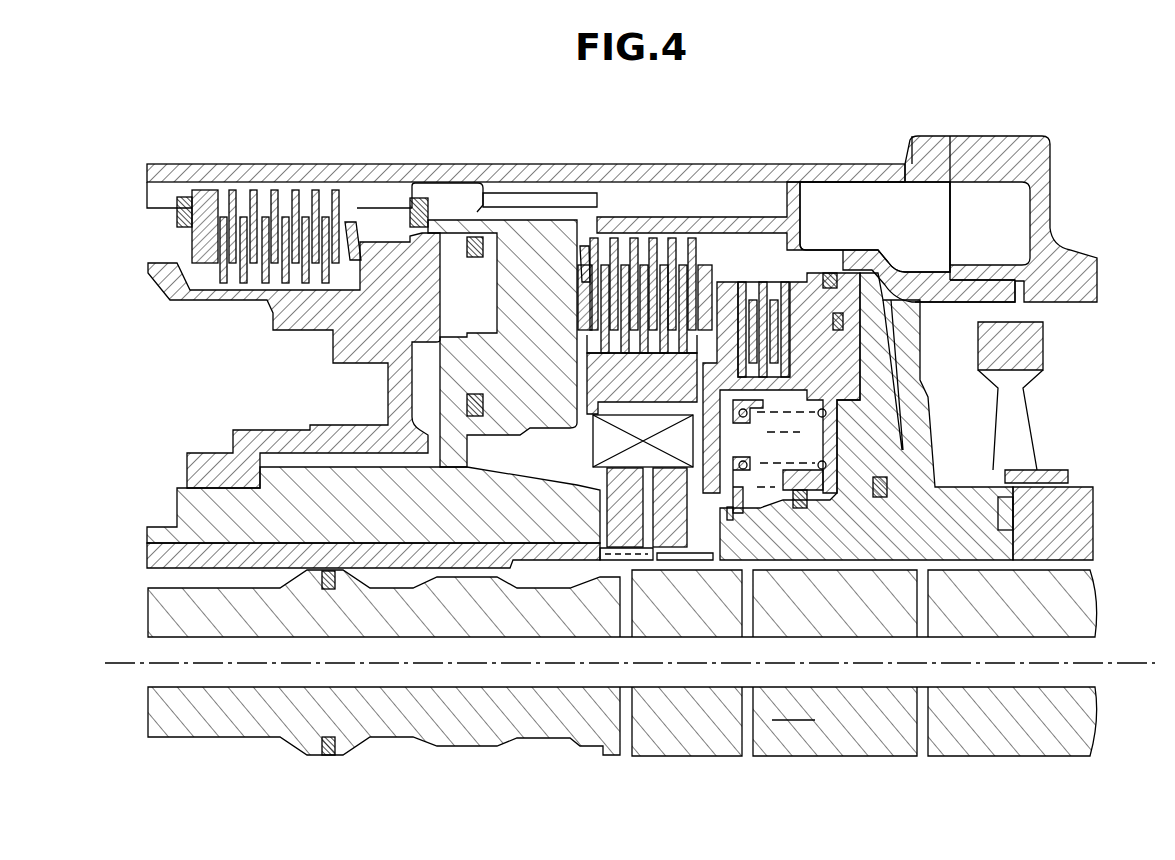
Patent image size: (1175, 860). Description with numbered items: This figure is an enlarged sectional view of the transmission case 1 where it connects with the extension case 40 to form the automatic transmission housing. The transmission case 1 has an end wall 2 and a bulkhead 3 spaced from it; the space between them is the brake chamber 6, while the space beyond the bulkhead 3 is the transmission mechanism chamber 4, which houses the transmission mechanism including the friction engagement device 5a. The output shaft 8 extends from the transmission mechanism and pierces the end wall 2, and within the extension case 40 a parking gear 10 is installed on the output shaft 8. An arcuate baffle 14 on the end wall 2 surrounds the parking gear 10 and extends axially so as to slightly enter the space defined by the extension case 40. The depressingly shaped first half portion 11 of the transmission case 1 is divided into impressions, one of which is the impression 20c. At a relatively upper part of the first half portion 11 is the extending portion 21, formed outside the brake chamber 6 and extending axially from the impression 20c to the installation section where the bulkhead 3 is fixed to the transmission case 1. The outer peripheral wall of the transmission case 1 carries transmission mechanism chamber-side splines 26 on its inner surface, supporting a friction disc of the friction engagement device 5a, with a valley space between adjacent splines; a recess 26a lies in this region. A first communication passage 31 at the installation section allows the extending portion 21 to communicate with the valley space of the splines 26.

The transmission case 1 is at (300, 158).
The transmission mechanism chamber 4 is at (382, 218).
The transmission mechanism chamber-side splines 26 is at (155, 195).
The friction engagement device 5a is at (192, 243).
The recess 26a is at (455, 193).
The first communication passage 31 is at (547, 198).
The extending portion 21 is at (726, 200).
The first half portion 11 is at (886, 200).
The impression 20c is at (925, 222).
The extension case 40 is at (1066, 131).
The bulkhead 3 is at (528, 310).
The baffle 14 is at (964, 302).
The end wall 2 is at (920, 385).
The brake chamber 6 is at (797, 443).
The parking gear 10 is at (1045, 393).
The output shaft 8 is at (1098, 595).